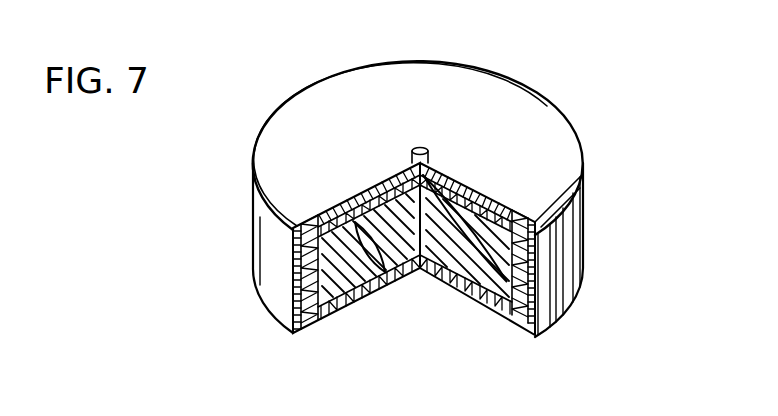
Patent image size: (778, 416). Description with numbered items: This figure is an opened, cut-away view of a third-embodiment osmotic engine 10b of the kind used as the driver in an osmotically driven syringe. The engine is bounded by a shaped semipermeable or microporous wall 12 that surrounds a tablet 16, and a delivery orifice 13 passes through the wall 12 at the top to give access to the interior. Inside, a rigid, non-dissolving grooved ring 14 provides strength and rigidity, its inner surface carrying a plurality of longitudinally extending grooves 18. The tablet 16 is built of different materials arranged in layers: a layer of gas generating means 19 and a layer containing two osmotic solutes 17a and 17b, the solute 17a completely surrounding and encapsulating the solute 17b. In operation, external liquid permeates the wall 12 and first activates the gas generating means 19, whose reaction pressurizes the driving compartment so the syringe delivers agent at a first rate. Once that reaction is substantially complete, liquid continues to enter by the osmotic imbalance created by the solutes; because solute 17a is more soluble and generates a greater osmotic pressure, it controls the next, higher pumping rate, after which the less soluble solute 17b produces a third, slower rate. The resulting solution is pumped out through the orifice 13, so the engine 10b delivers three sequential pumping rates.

The osmotic engine 10b is at (626, 97).
The semipermeable wall 12 is at (582, 265).
The delivery orifice 13 is at (422, 150).
The grooved ring 14 is at (500, 305).
The tablet 16 is at (330, 264).
The osmotic solute 17a is at (360, 278).
The osmotic solute 17b is at (338, 205).
The longitudinally extending grooves 18 is at (535, 206).
The gas generating means 19 is at (345, 303).